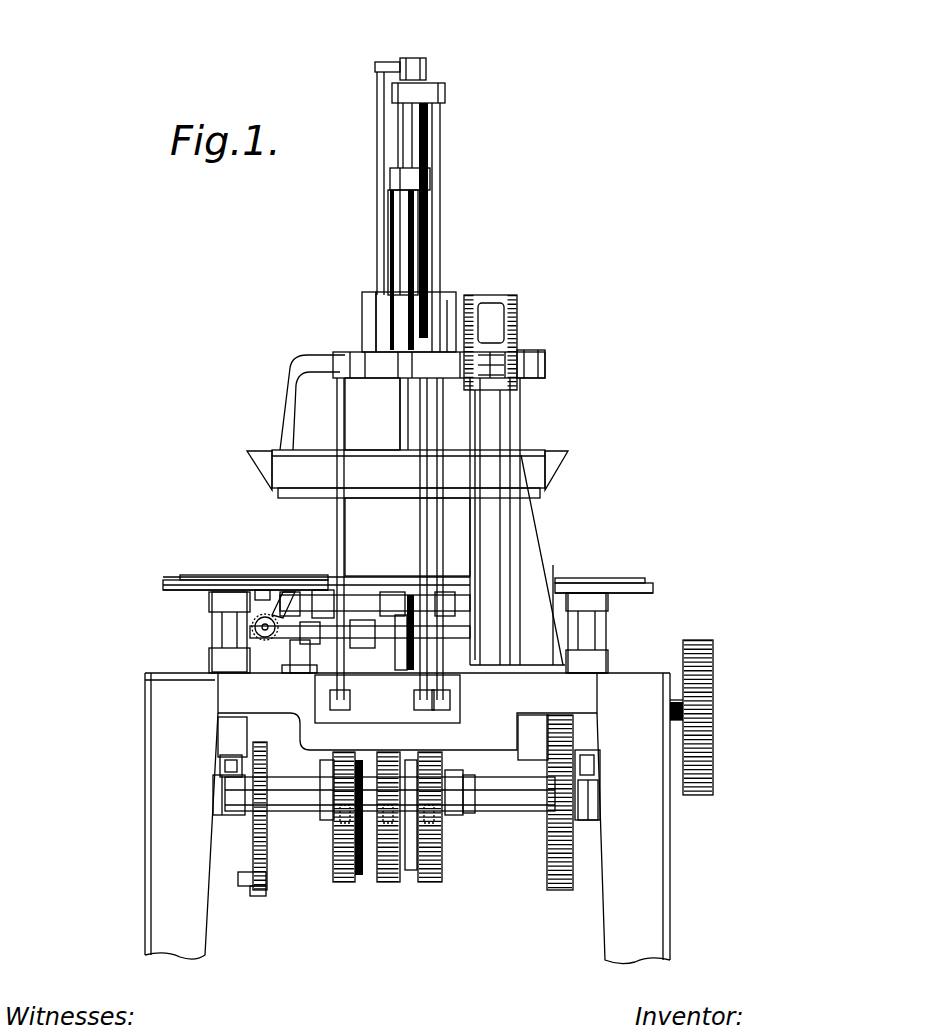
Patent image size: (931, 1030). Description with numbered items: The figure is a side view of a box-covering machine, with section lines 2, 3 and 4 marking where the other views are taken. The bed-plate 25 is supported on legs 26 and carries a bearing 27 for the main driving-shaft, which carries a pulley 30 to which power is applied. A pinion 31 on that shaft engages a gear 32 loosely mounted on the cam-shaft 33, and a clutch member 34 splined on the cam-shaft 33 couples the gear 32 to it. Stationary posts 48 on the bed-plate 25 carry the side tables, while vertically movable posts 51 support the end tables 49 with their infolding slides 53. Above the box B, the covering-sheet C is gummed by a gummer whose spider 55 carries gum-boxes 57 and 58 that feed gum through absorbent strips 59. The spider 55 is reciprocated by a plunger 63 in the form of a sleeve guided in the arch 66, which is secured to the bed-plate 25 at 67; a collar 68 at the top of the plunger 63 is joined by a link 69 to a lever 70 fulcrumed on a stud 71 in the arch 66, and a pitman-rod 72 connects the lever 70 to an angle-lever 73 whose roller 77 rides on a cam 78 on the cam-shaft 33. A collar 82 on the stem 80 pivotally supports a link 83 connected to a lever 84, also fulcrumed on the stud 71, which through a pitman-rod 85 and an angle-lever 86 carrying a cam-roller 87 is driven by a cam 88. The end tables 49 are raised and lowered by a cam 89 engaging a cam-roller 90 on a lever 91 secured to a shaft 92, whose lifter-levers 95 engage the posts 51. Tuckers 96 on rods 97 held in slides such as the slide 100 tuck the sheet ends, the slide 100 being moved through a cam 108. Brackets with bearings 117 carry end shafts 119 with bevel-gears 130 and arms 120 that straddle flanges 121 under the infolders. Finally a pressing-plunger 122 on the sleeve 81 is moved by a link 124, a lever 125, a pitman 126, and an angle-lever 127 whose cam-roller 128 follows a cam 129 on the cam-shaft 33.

The section line 2 is at (410, 0).
The section line 3 is at (245, 523).
The section line 4 is at (215, 690).
The bed-plate 25 is at (407, 711).
The legs 26 is at (407, 818).
The bearing 27 is at (683, 716).
The pulley 30 is at (700, 660).
The pinion 31 is at (596, 713).
The gear 32 is at (560, 892).
The cam-shaft 33 is at (215, 796).
The clutch member 34 is at (600, 800).
The posts 48 is at (240, 688).
The end tables 49 is at (185, 592).
The posts 51 is at (225, 640).
The slide 53 is at (172, 580).
The spider 55 is at (288, 385).
The gum-box 57 is at (408, 469).
The gum-box 58 is at (265, 462).
The felt strip 59 is at (285, 498).
The plunger 63 is at (400, 243).
The arch 66 is at (500, 430).
The securing point 67 is at (493, 525).
The collar 68 is at (430, 177).
The link 69 is at (428, 220).
The lever 70 is at (392, 382).
The stud 71 is at (545, 362).
The pitman-rod 72 is at (427, 515).
The angle-lever 73 is at (432, 885).
The roller 77 is at (383, 845).
The cam 78 is at (425, 860).
The stem 80 is at (430, 86).
The sleeve 81 is at (427, 135).
The collar 82 is at (426, 70).
The link 83 is at (377, 163).
The lever 84 is at (362, 325).
The pitman-rod 85 is at (337, 517).
The angle-lever 86 is at (328, 795).
The cam-roller 87 is at (330, 838).
The cam 88 is at (337, 886).
The cam 89 is at (258, 897).
The cam-roller 90 is at (252, 888).
The lever 91 is at (253, 853).
The shaft 92 is at (225, 805).
The lifter-levers 95 is at (228, 766).
The tuckers 96 is at (322, 590).
The rod 97 is at (280, 590).
The slide 100 is at (455, 683).
The cam 108 is at (348, 885).
The bearings 117 is at (285, 636).
The end shafts 119 is at (222, 625).
The arms 120 is at (225, 590).
The flanges 121 is at (215, 578).
The pressing-plunger 122 is at (371, 445).
The link 124 is at (441, 252).
The lever 125 is at (495, 295).
The pitman 126 is at (440, 410).
The angle-lever 127 is at (455, 822).
The cam-roller 128 is at (442, 835).
The cam 129 is at (442, 880).
The bevel-gears 130 is at (288, 655).
The box B is at (407, 537).
The covering-sheet C is at (380, 575).